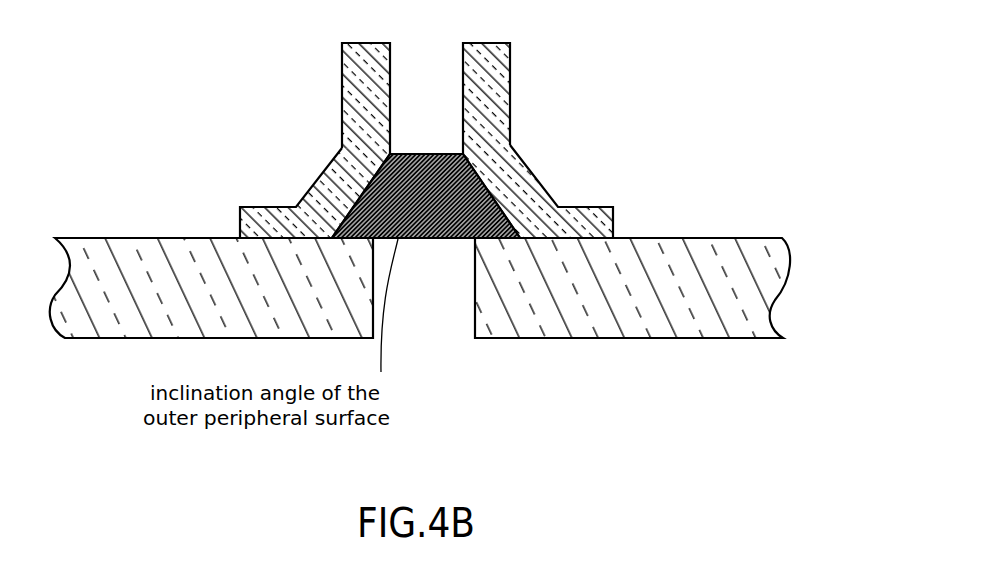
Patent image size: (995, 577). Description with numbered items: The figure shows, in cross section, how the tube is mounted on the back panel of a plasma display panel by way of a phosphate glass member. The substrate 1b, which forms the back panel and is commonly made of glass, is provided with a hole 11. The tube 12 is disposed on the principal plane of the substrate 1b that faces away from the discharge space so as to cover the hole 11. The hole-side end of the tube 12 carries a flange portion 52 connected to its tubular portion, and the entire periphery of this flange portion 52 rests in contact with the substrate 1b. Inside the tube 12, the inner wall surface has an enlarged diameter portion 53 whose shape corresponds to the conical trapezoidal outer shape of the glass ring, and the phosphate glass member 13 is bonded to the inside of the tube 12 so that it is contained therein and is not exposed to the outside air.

The substrate 1b is at (650, 328).
The hole 11 is at (425, 328).
The tube 12 is at (495, 98).
The phosphate glass member 13 is at (505, 212).
The flange portion 52 is at (587, 222).
The enlarged diameter portion 53 is at (317, 188).